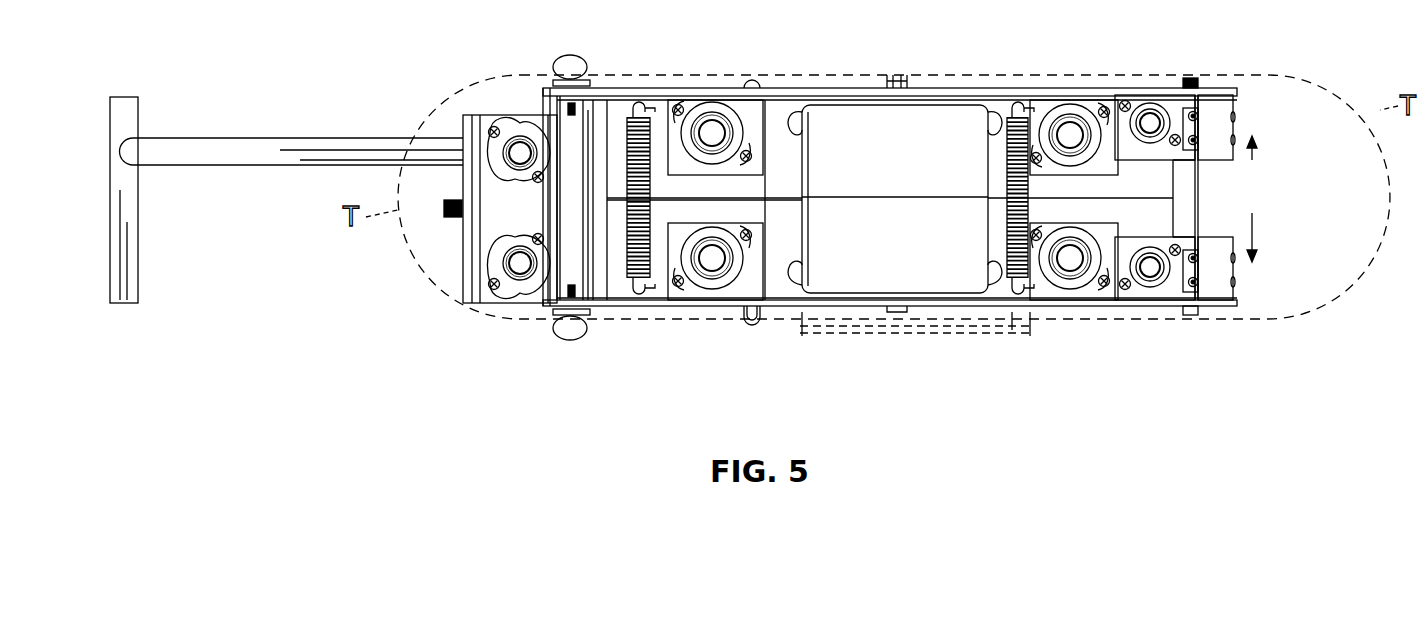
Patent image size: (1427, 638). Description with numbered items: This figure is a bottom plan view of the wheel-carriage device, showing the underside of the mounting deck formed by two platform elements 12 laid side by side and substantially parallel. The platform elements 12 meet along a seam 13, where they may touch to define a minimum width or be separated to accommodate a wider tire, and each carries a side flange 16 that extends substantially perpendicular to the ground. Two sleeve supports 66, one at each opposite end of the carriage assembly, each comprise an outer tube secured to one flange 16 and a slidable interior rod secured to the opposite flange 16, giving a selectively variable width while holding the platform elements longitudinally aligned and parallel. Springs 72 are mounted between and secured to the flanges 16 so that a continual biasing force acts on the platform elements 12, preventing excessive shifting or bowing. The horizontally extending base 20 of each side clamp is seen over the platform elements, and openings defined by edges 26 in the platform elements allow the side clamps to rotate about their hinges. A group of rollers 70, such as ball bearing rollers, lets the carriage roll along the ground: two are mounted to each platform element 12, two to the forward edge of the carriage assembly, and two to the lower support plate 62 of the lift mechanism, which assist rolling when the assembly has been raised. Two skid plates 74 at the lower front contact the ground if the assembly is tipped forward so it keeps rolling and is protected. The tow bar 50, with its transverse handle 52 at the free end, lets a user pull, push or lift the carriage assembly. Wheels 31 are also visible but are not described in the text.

The platform element 12 is at (894, 203).
The seam 13 is at (768, 202).
The side flange 16 is at (598, 90).
The horizontally extending base 20 is at (908, 166).
The opening edge 26 is at (800, 110).
The wheel 31 is at (570, 56).
The tow bar 50 is at (193, 147).
The transverse handle 52 is at (120, 113).
The lower support plate 62 is at (492, 229).
The sleeve support 66 is at (592, 138).
The roller 70 is at (518, 148).
The spring 72 is at (630, 110).
The skid plate 74 is at (1214, 112).